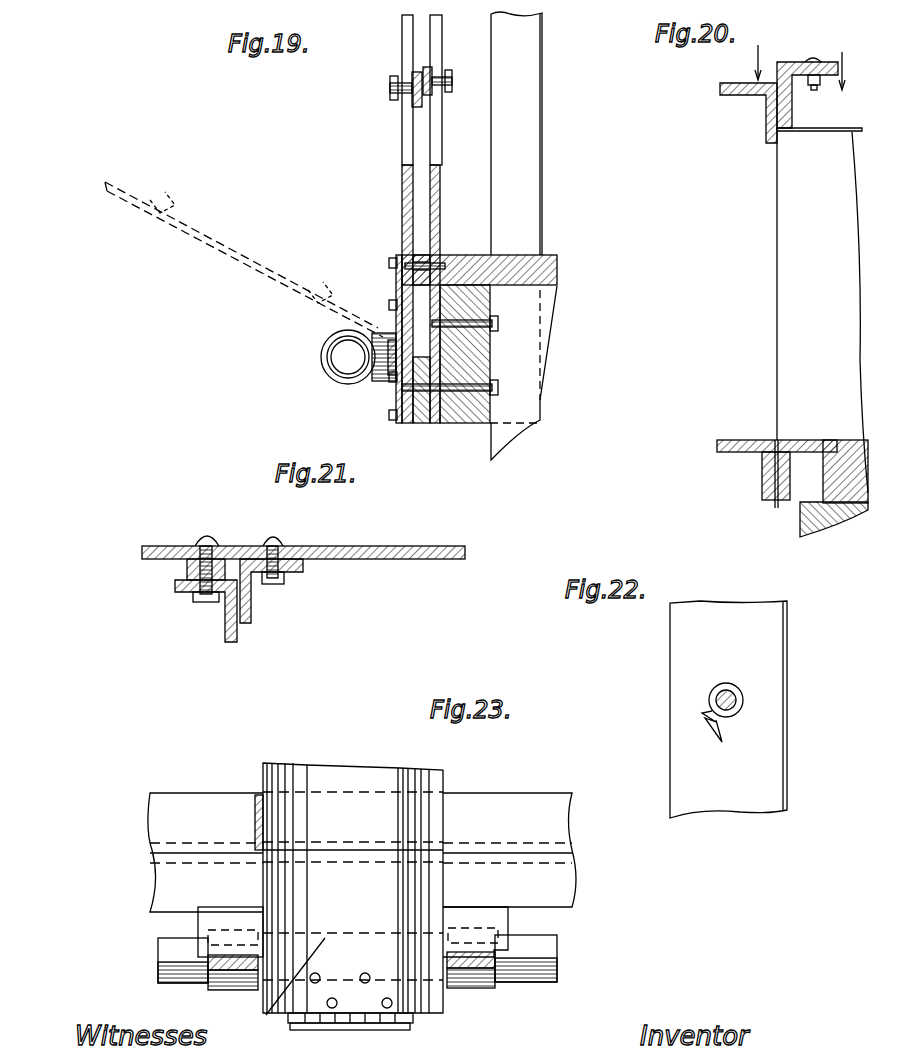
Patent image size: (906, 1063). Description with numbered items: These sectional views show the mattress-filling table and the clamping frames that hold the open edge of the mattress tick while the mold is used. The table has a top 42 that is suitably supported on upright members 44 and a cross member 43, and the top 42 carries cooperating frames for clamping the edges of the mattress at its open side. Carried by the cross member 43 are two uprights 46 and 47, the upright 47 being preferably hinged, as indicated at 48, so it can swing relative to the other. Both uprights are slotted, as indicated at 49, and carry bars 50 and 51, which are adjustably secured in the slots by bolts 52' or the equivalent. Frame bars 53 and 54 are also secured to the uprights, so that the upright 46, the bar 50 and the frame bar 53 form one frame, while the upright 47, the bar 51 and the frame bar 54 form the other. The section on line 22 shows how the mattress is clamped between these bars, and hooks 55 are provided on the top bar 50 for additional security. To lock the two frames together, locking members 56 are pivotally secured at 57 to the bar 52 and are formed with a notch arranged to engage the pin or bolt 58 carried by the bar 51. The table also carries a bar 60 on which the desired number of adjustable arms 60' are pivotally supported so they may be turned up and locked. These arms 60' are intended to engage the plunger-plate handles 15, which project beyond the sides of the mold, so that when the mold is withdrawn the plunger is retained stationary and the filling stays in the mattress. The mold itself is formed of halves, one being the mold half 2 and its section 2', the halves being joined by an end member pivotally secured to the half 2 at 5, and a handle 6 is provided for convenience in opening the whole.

In FIG. 23, the mold half 2 is at (353, 873).
In FIG. 23, the post section 2' is at (282, 991).
In FIG. 23, the pivot 5 is at (318, 1027).
In FIG. 23, the handle 6 is at (375, 1028).
In FIG. 23, the handle 15 is at (198, 922).
In FIG. 20, the section line 22 is at (762, 66).
In FIG. 19, the top 42 is at (545, 256).
In FIG. 20, the top 42 is at (848, 520).
In FIG. 19, the cross member 43 is at (485, 352).
In FIG. 19, the upright member 44 is at (540, 158).
In FIG. 19, the upright 46 is at (440, 215).
In FIG. 19, the upright 47 is at (402, 203).
In FIG. 19, the hinge 48 is at (375, 383).
In FIG. 19, the slot 49 is at (402, 135).
In FIG. 19, the bar 50 is at (428, 66).
In FIG. 20, the bar 50 is at (795, 62).
In FIG. 21, the bar 50 is at (252, 594).
In FIG. 22, the bar 50 is at (788, 780).
In FIG. 19, the bar 51 is at (412, 80).
In FIG. 20, the bar 51 is at (745, 95).
In FIG. 21, the bar 51 is at (225, 615).
In FIG. 19, the bar 52 is at (382, 92).
In FIG. 19, the bolt 52' is at (460, 63).
In FIG. 19, the frame bar 53 is at (437, 258).
In FIG. 20, the frame bar 53 is at (805, 440).
In FIG. 19, the frame bar 54 is at (398, 246).
In FIG. 20, the frame bar 54 is at (737, 440).
In FIG. 20, the hook 55 is at (830, 60).
In FIG. 22, the hook 55 is at (708, 730).
In FIG. 21, the locking member 56 is at (358, 546).
In FIG. 21, the pivot 57 is at (280, 536).
In FIG. 21, the pin or bolt 58 is at (207, 532).
In FIG. 19, the bar 60 is at (336, 357).
In FIG. 23, the bar 60 is at (337, 975).
In FIG. 23, the adjustable arm 60' is at (386, 978).